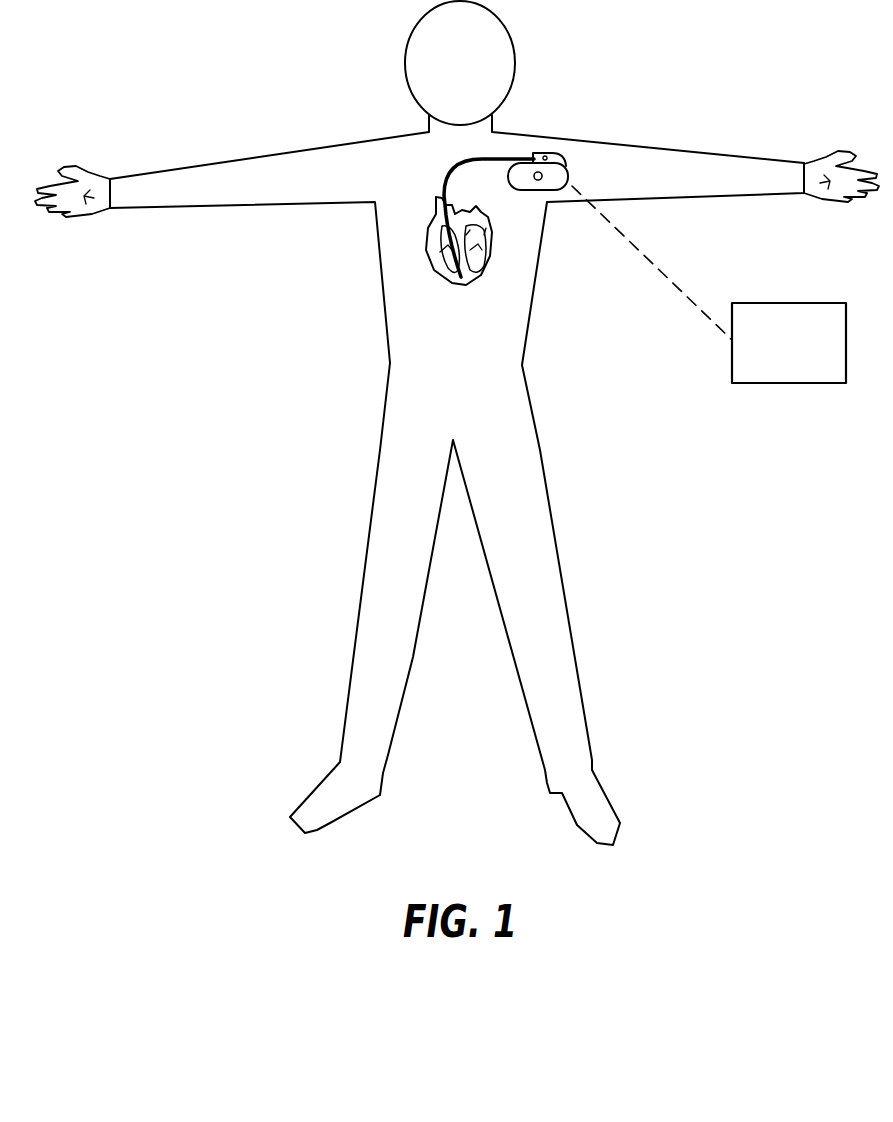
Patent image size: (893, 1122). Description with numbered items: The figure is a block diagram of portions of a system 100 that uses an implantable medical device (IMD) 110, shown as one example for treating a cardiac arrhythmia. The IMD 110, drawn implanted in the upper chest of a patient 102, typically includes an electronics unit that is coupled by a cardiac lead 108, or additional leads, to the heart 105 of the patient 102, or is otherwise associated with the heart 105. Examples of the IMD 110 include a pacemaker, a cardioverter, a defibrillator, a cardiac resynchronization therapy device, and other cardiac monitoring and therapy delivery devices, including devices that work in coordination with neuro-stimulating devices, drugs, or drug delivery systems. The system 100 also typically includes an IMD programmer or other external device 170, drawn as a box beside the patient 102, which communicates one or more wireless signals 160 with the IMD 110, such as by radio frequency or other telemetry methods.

The system 100 is at (293, 66).
The patient 102 is at (378, 249).
The heart 105 is at (437, 266).
The cardiac lead 108 is at (453, 165).
The implantable medical device 110 is at (567, 138).
The wireless signals 160 is at (646, 259).
The external device 170 is at (790, 303).